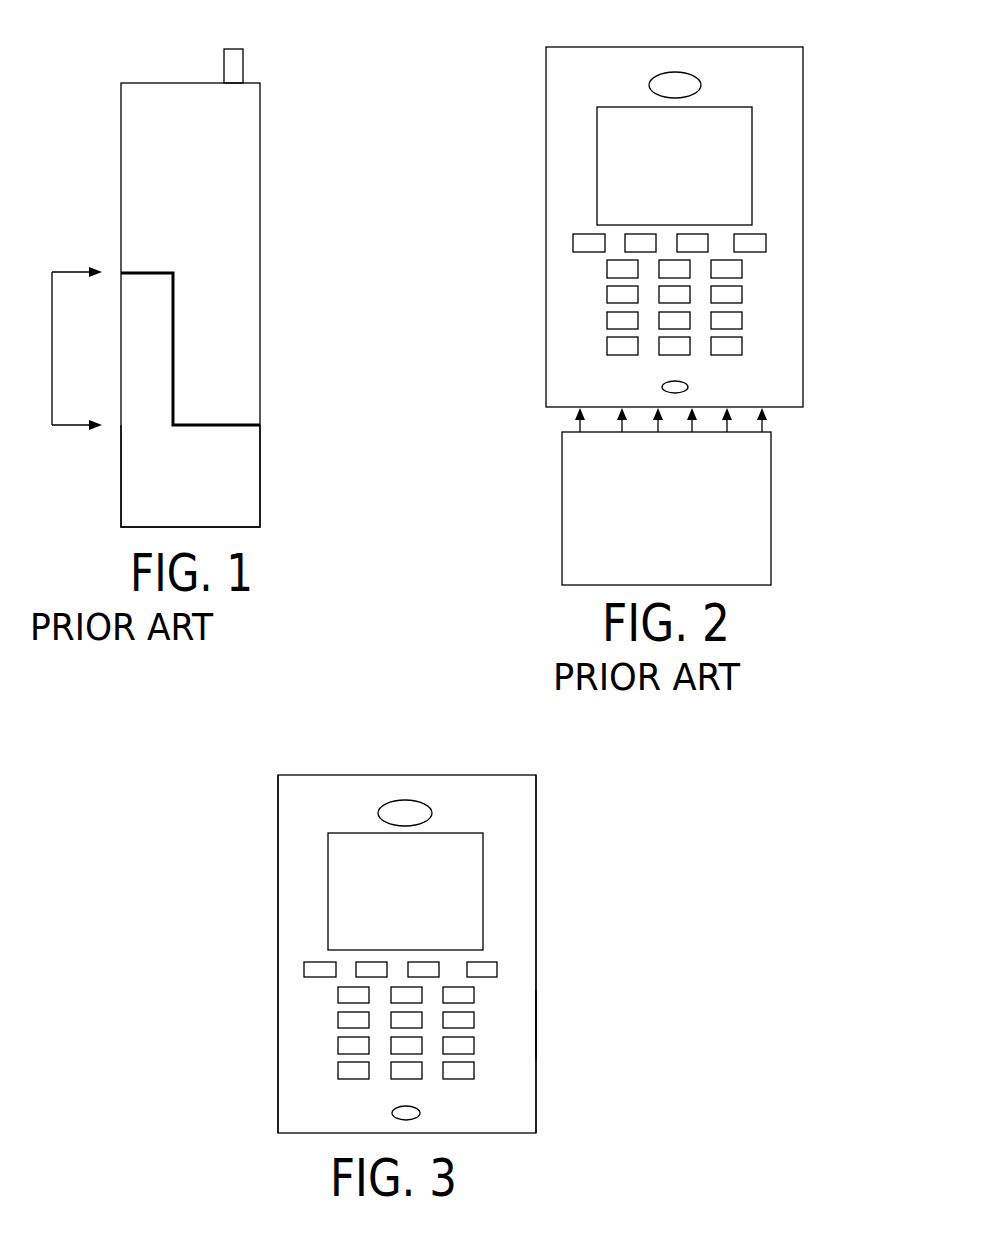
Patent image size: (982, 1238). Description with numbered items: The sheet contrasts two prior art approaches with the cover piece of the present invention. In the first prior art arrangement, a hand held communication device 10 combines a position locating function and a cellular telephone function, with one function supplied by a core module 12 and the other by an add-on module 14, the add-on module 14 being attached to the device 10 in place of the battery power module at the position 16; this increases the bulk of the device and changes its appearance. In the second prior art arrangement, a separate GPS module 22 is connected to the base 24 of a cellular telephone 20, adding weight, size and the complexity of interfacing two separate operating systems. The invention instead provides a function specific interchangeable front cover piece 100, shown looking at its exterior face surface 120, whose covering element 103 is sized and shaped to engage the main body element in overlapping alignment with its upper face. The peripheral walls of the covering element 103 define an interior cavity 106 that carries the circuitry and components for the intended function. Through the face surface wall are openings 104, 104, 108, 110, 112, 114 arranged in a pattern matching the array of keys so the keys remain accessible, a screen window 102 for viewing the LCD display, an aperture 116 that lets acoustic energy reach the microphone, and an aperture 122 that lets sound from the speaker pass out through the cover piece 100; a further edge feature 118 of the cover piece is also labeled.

In FIG. 1, the hand held communication device 10 is at (300, 208).
In FIG. 1, the core module 12 is at (255, 321).
In FIG. 1, the add-on module 14 is at (240, 474).
In FIG. 1, the battery power module position 16 is at (52, 358).
In FIG. 2, the cellular telephone 20 is at (834, 158).
In FIG. 2, the GPS module 22 is at (786, 517).
In FIG. 2, the base 24 is at (816, 393).
In FIG. 3, the function specific interchangeable front cover piece 100 is at (618, 824).
In FIG. 3, the screen window 102 is at (446, 867).
In FIG. 3, the covering element 103 is at (266, 808).
In FIG. 3, the key openings 104 is at (338, 1040).
In FIG. 3, the interior cavity 106 is at (553, 1025).
In FIG. 3, the key opening 108 is at (304, 962).
In FIG. 3, the key opening 110 is at (365, 962).
In FIG. 3, the key opening 112 is at (418, 962).
In FIG. 3, the key opening 114 is at (493, 962).
In FIG. 3, the microphone aperture 116 is at (415, 1106).
In FIG. 3, the housing edge 118 is at (537, 1122).
In FIG. 3, the exterior face surface 120 is at (344, 1111).
In FIG. 3, the speaker aperture 122 is at (405, 800).